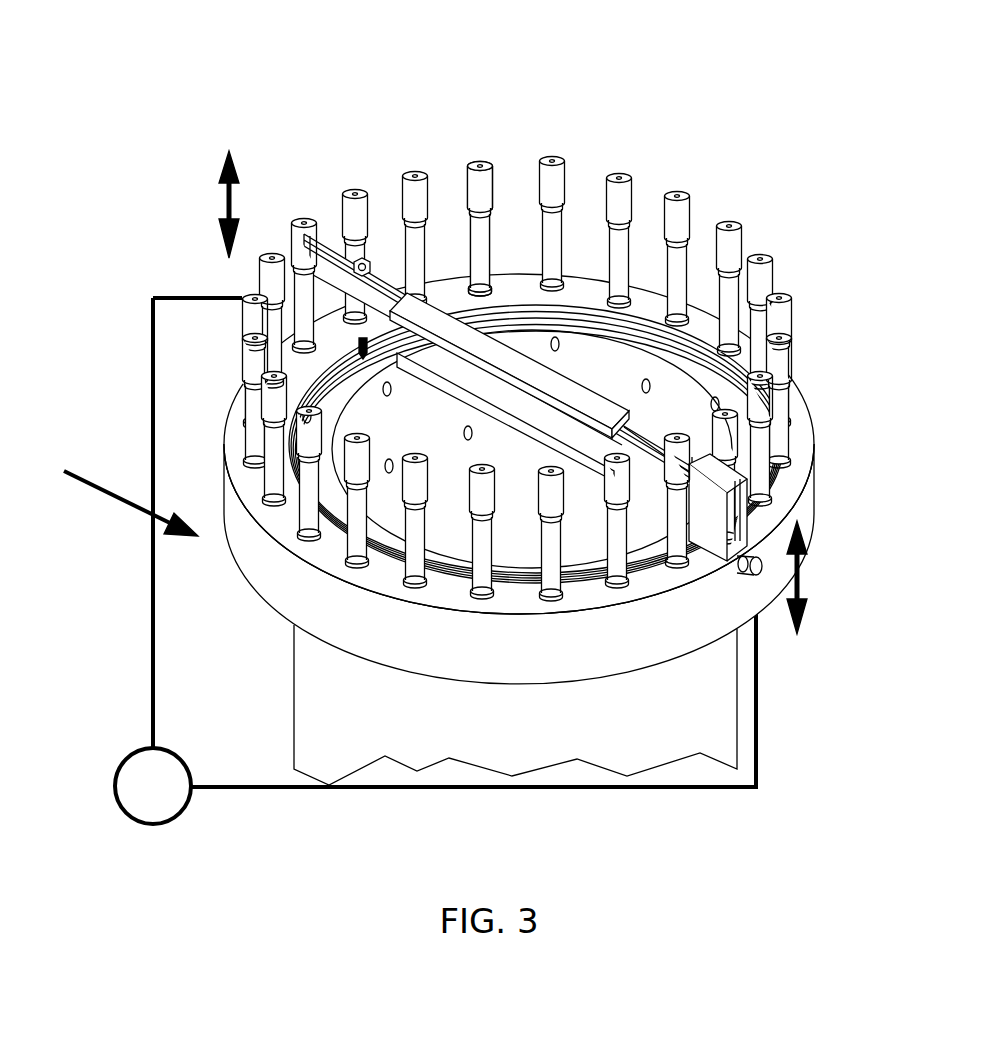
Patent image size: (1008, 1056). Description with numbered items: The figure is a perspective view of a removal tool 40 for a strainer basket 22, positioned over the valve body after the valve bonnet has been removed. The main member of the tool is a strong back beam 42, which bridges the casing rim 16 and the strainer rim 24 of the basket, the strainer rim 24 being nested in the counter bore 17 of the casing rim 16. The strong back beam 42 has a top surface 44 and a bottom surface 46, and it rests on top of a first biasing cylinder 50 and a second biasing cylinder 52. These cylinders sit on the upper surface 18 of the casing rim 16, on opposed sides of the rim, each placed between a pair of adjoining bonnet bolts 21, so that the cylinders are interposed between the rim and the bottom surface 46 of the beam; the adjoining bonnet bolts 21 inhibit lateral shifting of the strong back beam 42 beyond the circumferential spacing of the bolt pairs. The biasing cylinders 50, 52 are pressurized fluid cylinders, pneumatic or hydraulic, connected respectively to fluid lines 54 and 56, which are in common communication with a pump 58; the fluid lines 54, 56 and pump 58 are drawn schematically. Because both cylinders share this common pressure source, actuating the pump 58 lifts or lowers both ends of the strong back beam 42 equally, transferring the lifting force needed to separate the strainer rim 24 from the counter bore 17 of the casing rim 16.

The casing rim 16 is at (232, 566).
The counter bore 17 is at (438, 582).
The upper surface 18 is at (787, 470).
The bonnet bolts 21 is at (482, 162).
The strainer basket 22 is at (593, 368).
The strainer rim 24 is at (688, 350).
The removal tool 40 is at (324, 172).
The strong back beam 42 is at (279, 237).
The top surface 44 is at (627, 403).
The bottom surface 46 is at (268, 393).
The first biasing cylinder 50 is at (250, 318).
The second biasing cylinder 52 is at (748, 572).
The fluid line 54 is at (151, 635).
The fluid line 56 is at (630, 790).
The pump 58 is at (165, 812).